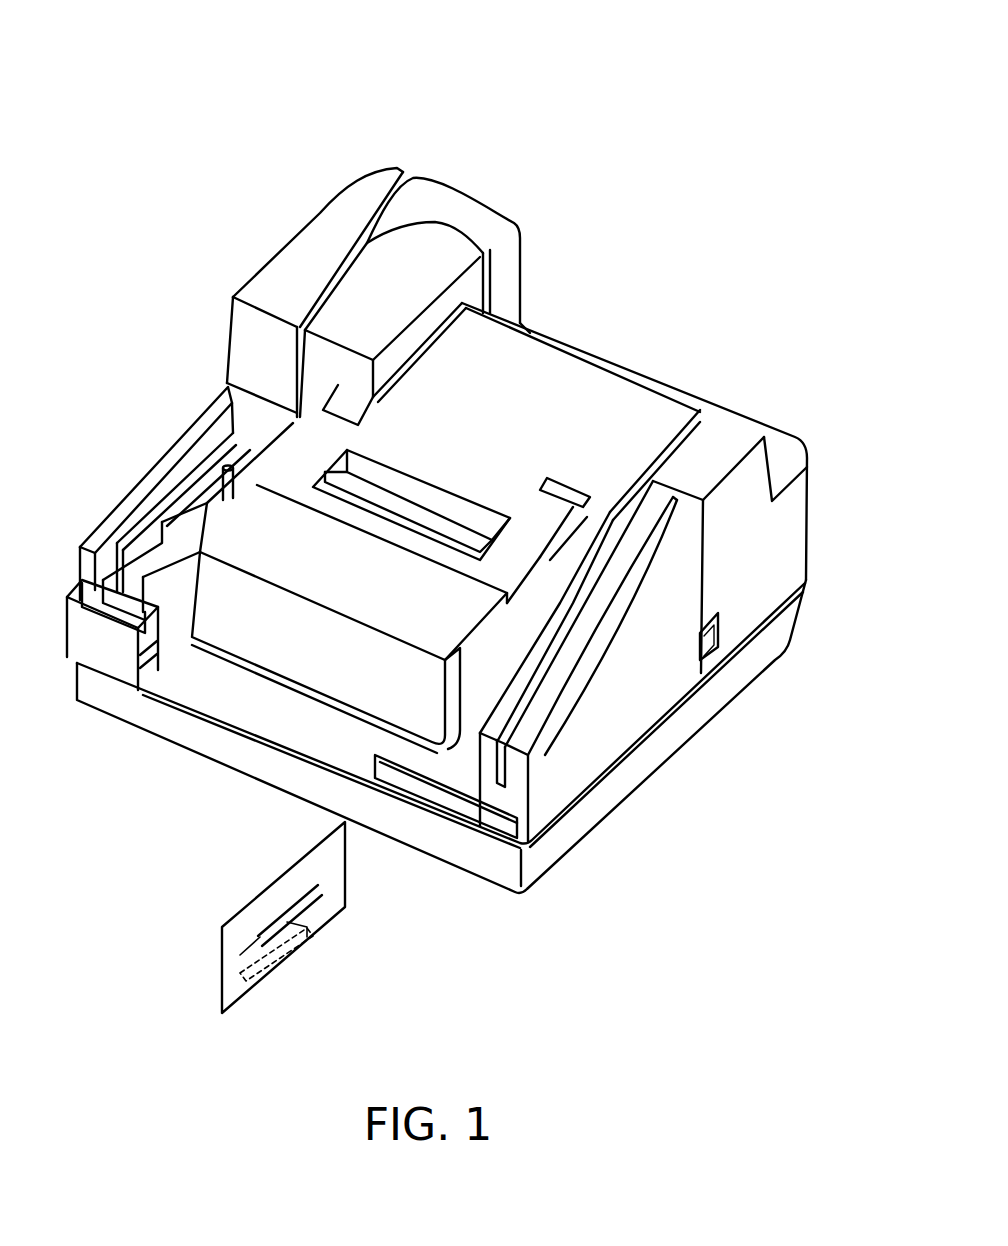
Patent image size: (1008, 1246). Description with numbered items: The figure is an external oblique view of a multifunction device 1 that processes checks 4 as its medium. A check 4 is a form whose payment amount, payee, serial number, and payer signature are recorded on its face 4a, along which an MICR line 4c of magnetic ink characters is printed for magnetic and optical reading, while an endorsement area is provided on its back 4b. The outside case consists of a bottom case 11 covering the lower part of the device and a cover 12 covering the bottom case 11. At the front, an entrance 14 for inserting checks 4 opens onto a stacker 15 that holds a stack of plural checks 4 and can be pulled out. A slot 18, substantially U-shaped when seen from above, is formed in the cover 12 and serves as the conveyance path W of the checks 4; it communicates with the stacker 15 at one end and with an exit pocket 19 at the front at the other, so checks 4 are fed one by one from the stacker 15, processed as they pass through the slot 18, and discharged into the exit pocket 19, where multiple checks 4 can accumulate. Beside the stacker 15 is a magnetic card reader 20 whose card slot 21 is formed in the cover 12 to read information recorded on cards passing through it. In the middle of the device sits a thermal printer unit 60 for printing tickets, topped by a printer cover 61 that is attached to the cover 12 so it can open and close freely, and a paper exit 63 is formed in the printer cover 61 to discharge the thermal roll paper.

The multifunction device 1 is at (461, 82).
The check 4 is at (340, 925).
The face 4a is at (243, 963).
The back 4b is at (240, 955).
The MICR line 4c is at (288, 950).
The bottom case 11 is at (713, 690).
The cover 12 is at (783, 523).
The entrance 14 is at (468, 768).
The stacker 15 is at (468, 793).
The slot 18 is at (457, 243).
The exit pocket 19 is at (203, 497).
The magnetic card reader 20 is at (587, 723).
The card slot 21 is at (572, 645).
The thermal printer unit 60 is at (558, 373).
The printer cover 61 is at (627, 417).
The paper exit 63 is at (427, 492).
The conveyance path W is at (421, 225).